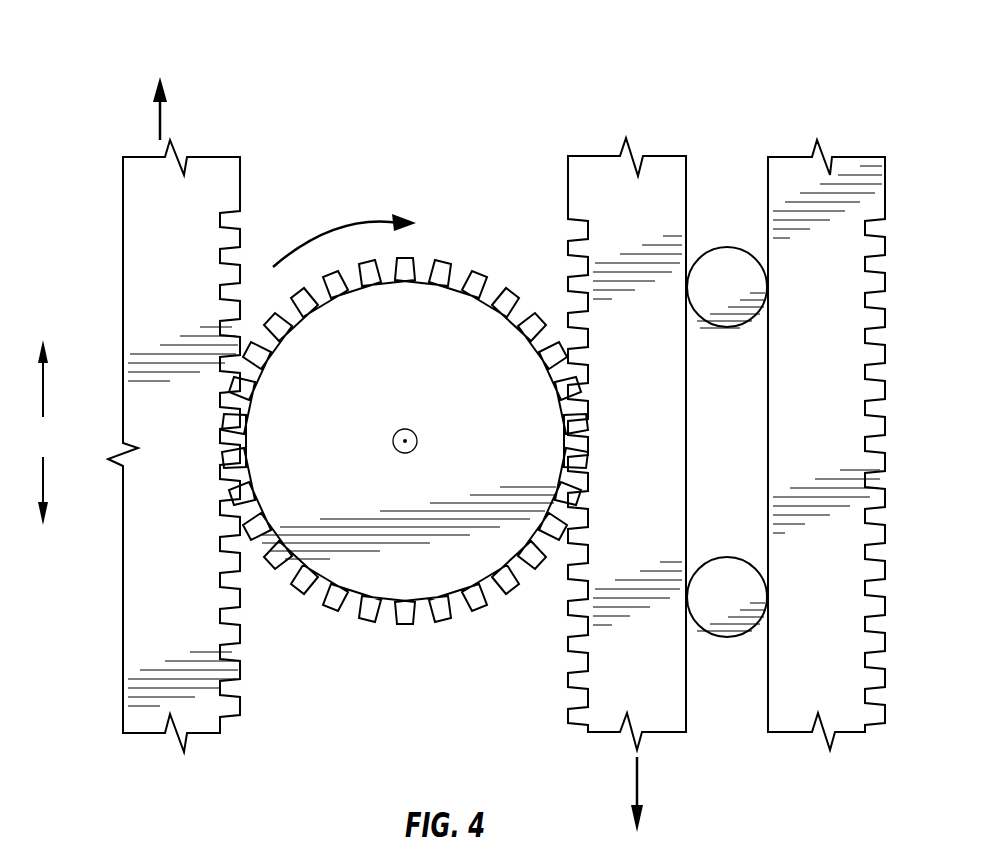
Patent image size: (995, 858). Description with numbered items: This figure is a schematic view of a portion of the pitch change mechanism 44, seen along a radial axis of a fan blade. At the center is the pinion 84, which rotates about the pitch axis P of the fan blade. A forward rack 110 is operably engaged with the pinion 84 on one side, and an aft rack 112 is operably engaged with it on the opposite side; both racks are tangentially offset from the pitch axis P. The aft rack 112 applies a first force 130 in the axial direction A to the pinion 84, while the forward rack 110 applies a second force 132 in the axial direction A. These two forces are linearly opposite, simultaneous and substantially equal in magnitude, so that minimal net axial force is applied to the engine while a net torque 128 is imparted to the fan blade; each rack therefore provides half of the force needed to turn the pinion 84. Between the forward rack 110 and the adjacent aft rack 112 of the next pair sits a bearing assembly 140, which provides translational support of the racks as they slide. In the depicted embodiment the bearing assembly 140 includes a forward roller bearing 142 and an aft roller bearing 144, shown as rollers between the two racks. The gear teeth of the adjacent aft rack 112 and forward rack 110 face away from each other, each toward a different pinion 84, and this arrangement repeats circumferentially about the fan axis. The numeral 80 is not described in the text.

The pitch change mechanism 44 is at (352, 48).
The gear 80 is at (405, 506).
The pinion 84 is at (435, 622).
The pitch axis P is at (405, 429).
The forward rack 110 is at (600, 156).
The aft rack 112 is at (212, 157).
The torque 128 is at (340, 231).
The first force 130 is at (160, 120).
The second force 132 is at (637, 773).
The bearing assembly 140 is at (727, 391).
The forward roller bearing 142 is at (731, 637).
The aft roller bearing 144 is at (726, 327).
The axial direction A is at (42, 432).